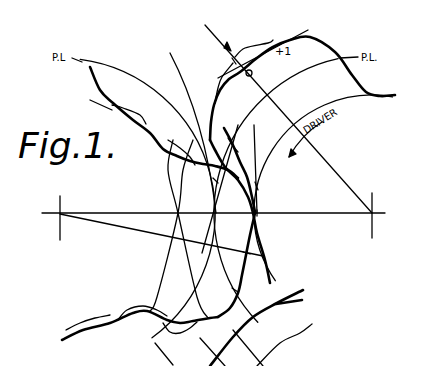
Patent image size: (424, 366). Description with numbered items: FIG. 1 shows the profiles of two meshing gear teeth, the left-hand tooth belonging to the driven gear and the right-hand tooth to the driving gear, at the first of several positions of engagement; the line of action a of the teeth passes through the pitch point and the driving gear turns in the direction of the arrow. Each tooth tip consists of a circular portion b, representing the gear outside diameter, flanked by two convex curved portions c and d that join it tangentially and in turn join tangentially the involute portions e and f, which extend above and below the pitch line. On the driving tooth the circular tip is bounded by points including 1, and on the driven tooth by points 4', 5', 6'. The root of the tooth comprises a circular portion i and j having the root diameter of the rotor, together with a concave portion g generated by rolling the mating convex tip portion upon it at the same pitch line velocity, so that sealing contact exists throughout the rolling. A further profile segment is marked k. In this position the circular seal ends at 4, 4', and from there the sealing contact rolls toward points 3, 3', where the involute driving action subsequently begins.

The tooth tip point 1 is at (302, 88).
The circular tooth tip portion b is at (281, 260).
The rolling seal end point 3 is at (241, 170).
The rolling seal end point 3' is at (209, 181).
The convex curved portion c is at (253, 183).
The circular seal end point 4 is at (264, 209).
The circular seal end point 4' is at (236, 265).
The tooth tip point 5' is at (240, 252).
The tooth tip point 6' is at (228, 288).
The line of action a is at (214, 228).
The involute portion e is at (236, 145).
The concave root portion g is at (181, 147).
The circular root portion i is at (164, 122).
The circular root portion j is at (140, 321).
The tooth portion k is at (142, 305).
The involute portion f is at (180, 337).
The convex curved portion d is at (203, 342).